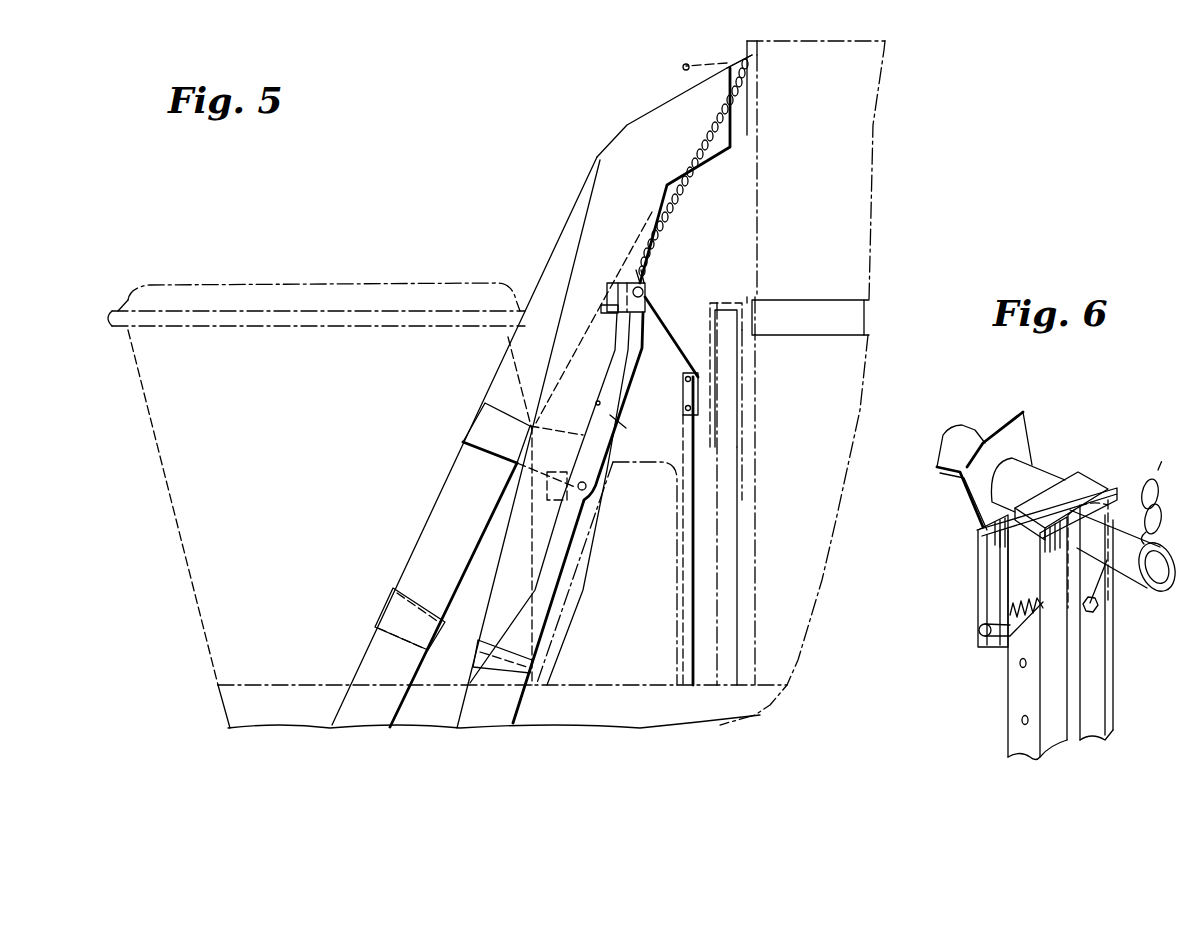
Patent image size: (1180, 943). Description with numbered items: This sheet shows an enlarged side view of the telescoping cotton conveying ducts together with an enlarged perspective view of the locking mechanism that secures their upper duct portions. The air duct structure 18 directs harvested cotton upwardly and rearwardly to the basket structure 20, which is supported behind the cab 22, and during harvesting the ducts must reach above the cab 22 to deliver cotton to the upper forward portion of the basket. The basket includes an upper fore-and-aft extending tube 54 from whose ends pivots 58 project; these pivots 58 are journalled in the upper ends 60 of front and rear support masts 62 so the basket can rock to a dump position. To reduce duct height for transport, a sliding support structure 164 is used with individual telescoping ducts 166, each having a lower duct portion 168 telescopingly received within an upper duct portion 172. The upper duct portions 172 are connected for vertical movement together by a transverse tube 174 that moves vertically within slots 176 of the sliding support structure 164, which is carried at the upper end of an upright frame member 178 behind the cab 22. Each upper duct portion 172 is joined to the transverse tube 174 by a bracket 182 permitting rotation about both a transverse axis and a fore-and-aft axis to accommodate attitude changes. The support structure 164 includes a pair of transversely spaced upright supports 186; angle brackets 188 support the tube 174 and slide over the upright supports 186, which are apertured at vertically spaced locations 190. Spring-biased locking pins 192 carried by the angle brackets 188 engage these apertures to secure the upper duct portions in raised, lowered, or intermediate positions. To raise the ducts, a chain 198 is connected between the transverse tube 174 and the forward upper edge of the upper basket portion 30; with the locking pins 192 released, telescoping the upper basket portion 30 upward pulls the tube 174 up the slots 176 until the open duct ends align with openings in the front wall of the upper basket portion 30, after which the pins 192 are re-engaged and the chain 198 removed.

In FIG. 5, the air duct structure 18 is at (524, 132).
In FIG. 5, the basket structure 20 is at (805, 38).
In FIG. 5, the cab 22 is at (215, 283).
In FIG. 5, the upper basket portion 30 is at (755, 225).
In FIG. 5, the upper fore-and-aft extending tube 54 is at (846, 270).
In FIG. 5, the pivots 58 is at (747, 303).
In FIG. 5, the upper ends of support masts 60 is at (728, 347).
In FIG. 5, the support masts 62 is at (728, 460).
In FIG. 5, the sliding support structure 164 is at (622, 422).
In FIG. 6, the sliding support structure 164 is at (997, 686).
In FIG. 5, the telescoping ducts 166 is at (497, 588).
In FIG. 5, the lower duct portion 168 is at (373, 632).
In FIG. 5, the upper duct portion 172 is at (577, 223).
In FIG. 5, the transverse tube 174 is at (646, 291).
In FIG. 6, the transverse tube 174 is at (1032, 478).
In FIG. 5, the slots 176 is at (596, 453).
In FIG. 6, the slots 176 is at (1077, 660).
In FIG. 5, the upright frame member 178 is at (693, 555).
In FIG. 5, the bracket 182 is at (646, 283).
In FIG. 6, the bracket 182 is at (1027, 420).
In FIG. 5, the upright supports 186 is at (598, 397).
In FIG. 6, the upright supports 186 is at (1008, 667).
In FIG. 5, the angle brackets 188 is at (605, 292).
In FIG. 6, the angle brackets 188 is at (988, 558).
In FIG. 6, the apertured locations 190 is at (1010, 703).
In FIG. 6, the spring-biased locking pins 192 is at (987, 637).
In FIG. 5, the chain 198 is at (693, 170).
In FIG. 6, the chain 198 is at (1138, 477).